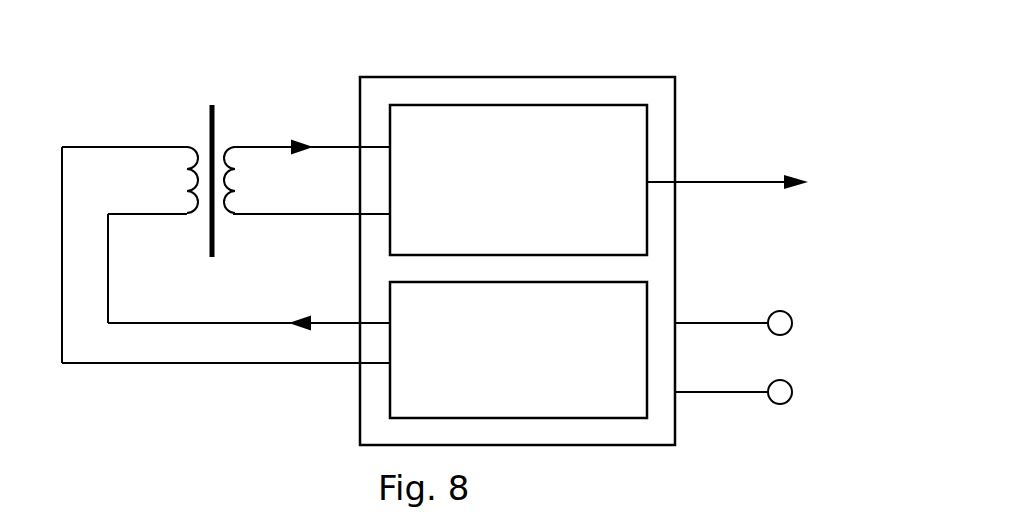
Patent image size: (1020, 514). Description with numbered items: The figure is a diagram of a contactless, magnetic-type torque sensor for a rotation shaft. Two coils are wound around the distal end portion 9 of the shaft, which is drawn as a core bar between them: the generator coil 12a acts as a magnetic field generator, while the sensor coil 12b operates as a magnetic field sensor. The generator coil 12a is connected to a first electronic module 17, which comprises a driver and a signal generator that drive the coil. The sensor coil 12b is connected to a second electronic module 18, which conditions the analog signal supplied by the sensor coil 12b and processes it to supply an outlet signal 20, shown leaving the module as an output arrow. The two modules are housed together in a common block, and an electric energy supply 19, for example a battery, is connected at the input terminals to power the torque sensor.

The end portion 9 is at (209, 124).
The generator coil 12a is at (186, 180).
The sensor coil 12b is at (236, 166).
The first module 17 is at (506, 369).
The second module 18 is at (506, 199).
The energy supply 19 is at (798, 359).
The outlet signal 20 is at (755, 179).